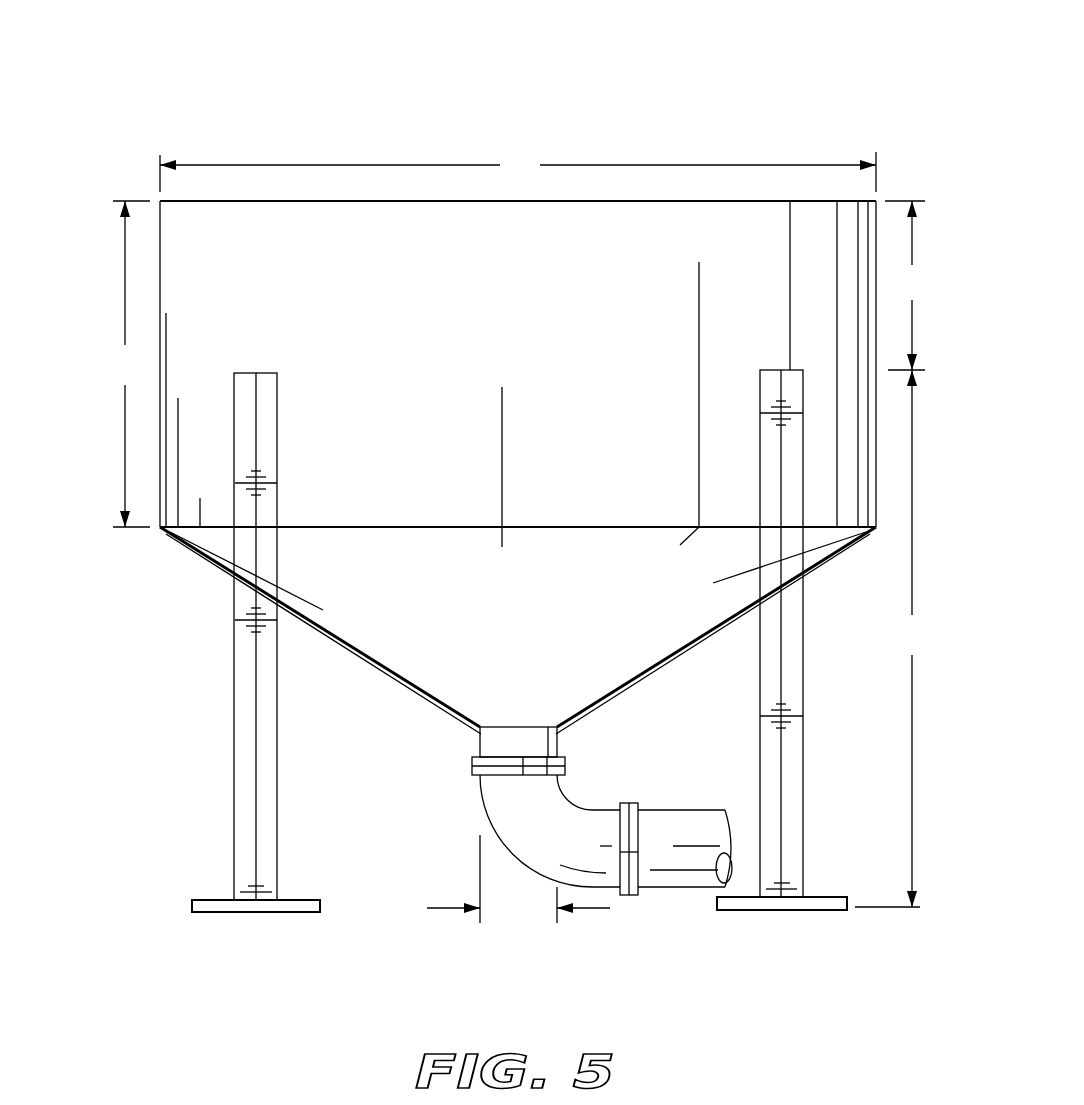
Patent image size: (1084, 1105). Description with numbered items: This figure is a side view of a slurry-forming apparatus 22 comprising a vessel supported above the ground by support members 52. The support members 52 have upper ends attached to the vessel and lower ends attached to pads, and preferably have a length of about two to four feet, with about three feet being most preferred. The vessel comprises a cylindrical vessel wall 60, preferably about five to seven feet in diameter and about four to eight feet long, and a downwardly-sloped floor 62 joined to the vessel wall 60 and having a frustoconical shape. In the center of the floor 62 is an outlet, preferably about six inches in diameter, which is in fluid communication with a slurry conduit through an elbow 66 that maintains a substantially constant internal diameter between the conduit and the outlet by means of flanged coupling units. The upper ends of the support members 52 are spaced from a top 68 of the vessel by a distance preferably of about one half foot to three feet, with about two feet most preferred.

The apparatus 22 is at (757, 40).
The support members 52 is at (803, 667).
The cylindrical vessel wall 60 is at (596, 358).
The downwardly-sloped floor 62 is at (435, 643).
The elbow 66 is at (597, 830).
The top 68 is at (360, 201).